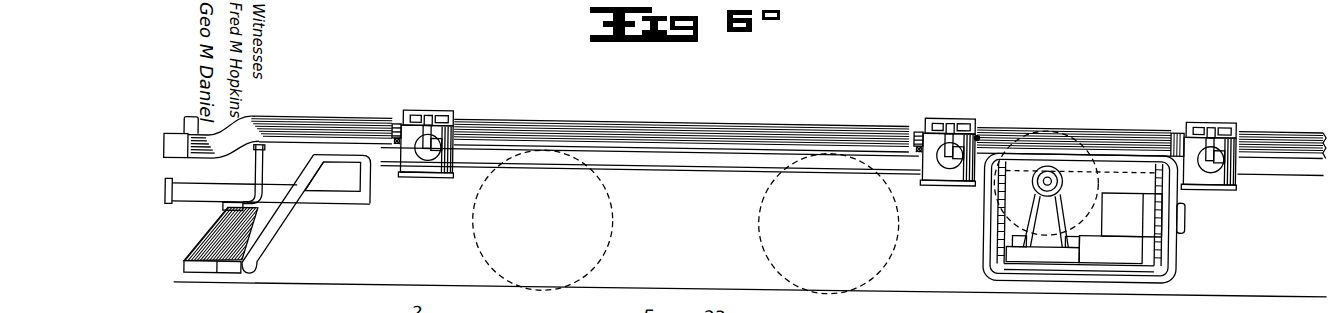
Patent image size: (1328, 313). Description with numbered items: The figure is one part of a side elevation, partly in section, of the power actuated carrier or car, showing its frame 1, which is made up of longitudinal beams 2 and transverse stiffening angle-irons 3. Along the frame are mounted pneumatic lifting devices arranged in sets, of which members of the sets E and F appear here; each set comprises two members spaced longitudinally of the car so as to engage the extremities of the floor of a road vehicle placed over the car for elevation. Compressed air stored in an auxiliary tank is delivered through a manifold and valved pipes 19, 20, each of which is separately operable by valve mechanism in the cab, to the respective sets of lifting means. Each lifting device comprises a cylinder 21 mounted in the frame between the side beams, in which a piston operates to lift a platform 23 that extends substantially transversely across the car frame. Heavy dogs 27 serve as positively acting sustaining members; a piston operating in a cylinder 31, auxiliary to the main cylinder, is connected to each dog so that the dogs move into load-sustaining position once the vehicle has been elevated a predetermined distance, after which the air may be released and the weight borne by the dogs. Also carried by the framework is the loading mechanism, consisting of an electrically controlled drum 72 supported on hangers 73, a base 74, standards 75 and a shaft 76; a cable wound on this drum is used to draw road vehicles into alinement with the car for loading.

The frame 1 is at (299, 158).
The longitudinal beams 2 is at (333, 119).
The transverse stiffening angle-irons 3 is at (1169, 123).
The valved pipe 19 is at (1298, 164).
The valved pipe 20 is at (748, 167).
The cylinder 21 is at (1229, 166).
The platform 23 is at (977, 127).
The dogs 27 is at (934, 148).
The cylinder 31 is at (1240, 154).
The drum 72 is at (1047, 183).
The hangers 73 is at (1102, 256).
The base 74 is at (1052, 252).
The standards 75 is at (1046, 221).
The shaft 76 is at (1049, 173).
The pneumatic lifting devices F is at (689, 110).
The pneumatic lifting devices E is at (1211, 118).